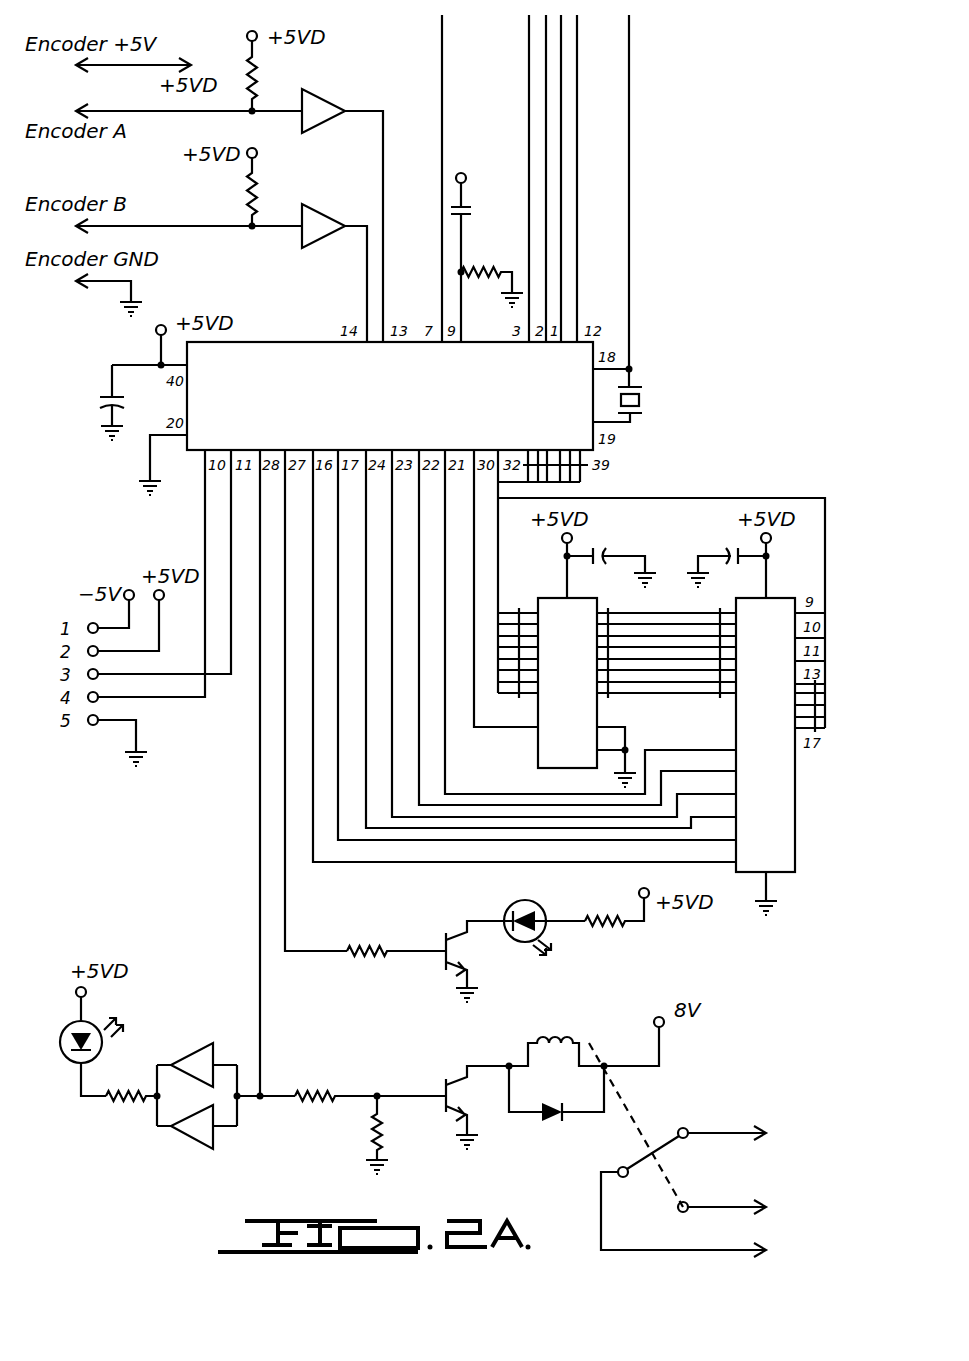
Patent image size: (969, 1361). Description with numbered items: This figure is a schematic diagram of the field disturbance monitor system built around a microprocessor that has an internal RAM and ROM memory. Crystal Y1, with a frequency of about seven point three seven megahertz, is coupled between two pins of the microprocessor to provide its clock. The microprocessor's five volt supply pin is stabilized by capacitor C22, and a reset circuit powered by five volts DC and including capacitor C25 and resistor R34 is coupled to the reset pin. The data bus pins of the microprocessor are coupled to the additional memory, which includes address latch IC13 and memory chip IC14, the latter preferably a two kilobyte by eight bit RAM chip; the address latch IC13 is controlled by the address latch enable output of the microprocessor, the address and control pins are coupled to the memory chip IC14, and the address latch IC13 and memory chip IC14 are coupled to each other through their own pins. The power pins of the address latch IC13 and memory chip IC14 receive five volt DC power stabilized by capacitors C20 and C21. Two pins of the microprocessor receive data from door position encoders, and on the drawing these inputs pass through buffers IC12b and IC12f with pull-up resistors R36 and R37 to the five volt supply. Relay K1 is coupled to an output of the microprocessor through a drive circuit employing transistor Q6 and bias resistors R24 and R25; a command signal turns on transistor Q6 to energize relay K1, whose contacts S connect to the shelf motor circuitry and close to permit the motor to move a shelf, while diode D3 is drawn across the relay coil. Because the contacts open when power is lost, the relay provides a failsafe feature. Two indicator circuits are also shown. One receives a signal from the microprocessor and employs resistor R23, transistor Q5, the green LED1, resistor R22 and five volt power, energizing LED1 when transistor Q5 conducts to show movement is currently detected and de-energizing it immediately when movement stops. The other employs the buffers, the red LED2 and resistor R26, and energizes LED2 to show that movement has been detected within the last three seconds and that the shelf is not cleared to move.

The pull-up resistor R36 is at (277, 71).
The pull-up resistor R37 is at (226, 187).
The buffer gate IC12b is at (335, 215).
The buffer gate IC12f is at (328, 273).
The capacitor C22 is at (86, 402).
The capacitor C25 is at (485, 257).
The resistor R34 is at (492, 272).
The crystal Y1 is at (641, 395).
The address latch IC13 is at (621, 684).
The memory chip IC14 is at (754, 748).
The capacitor C21 is at (611, 554).
The capacitor C20 is at (725, 556).
The resistor R23 is at (396, 937).
The transistor Q5 is at (457, 961).
The green LED LED1 is at (517, 921).
The resistor R22 is at (615, 923).
The red LED LED2 is at (120, 1041).
The resistor R26 is at (123, 1114).
The bias resistor R24 is at (370, 1082).
The bias resistor R25 is at (355, 1135).
The transistor Q6 is at (463, 1107).
The relay K1 is at (586, 1038).
The flyback diode D3 is at (556, 1109).
The relay switch contacts S is at (683, 1181).